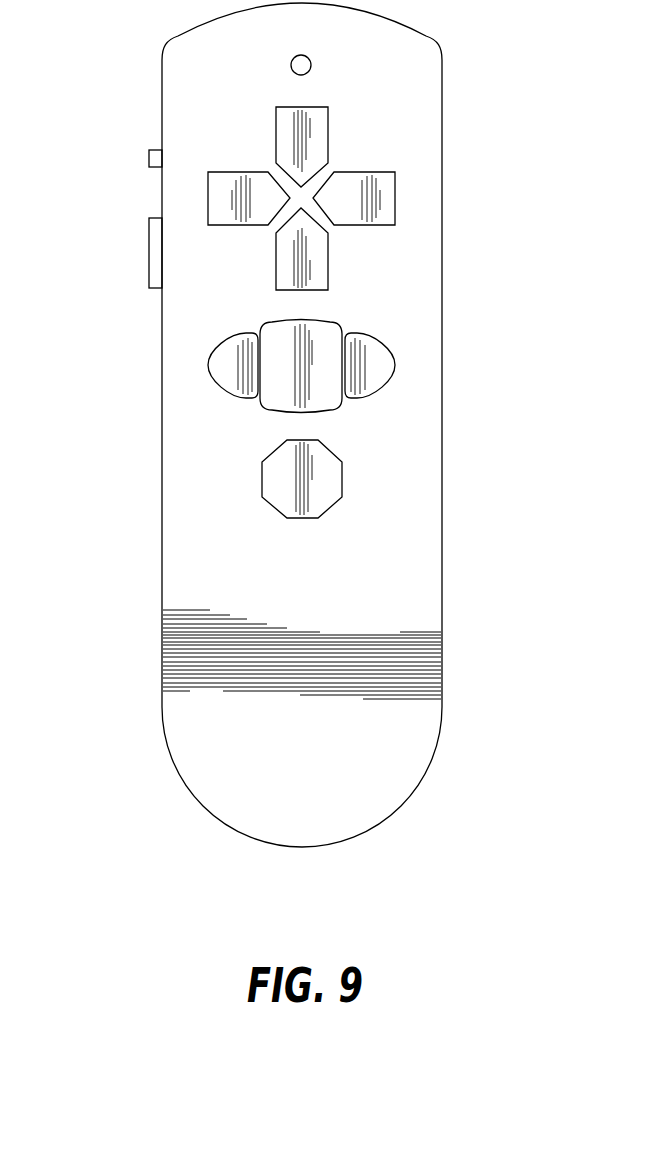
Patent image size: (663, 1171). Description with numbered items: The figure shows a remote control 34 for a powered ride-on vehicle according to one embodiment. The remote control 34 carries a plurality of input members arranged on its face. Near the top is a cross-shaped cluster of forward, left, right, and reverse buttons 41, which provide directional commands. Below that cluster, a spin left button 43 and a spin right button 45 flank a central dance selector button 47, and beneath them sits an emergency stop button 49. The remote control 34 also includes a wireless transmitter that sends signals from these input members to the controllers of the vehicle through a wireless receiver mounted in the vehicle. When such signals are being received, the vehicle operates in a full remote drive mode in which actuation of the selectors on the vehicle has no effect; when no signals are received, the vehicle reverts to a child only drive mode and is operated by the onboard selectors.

The forward, left, right, and reverse buttons 41 is at (217, 130).
The spin left button 43 is at (226, 376).
The spin right button 45 is at (380, 370).
The dance selector button 47 is at (328, 337).
The emergency stop button 49 is at (342, 497).
The remote control 34 is at (442, 645).